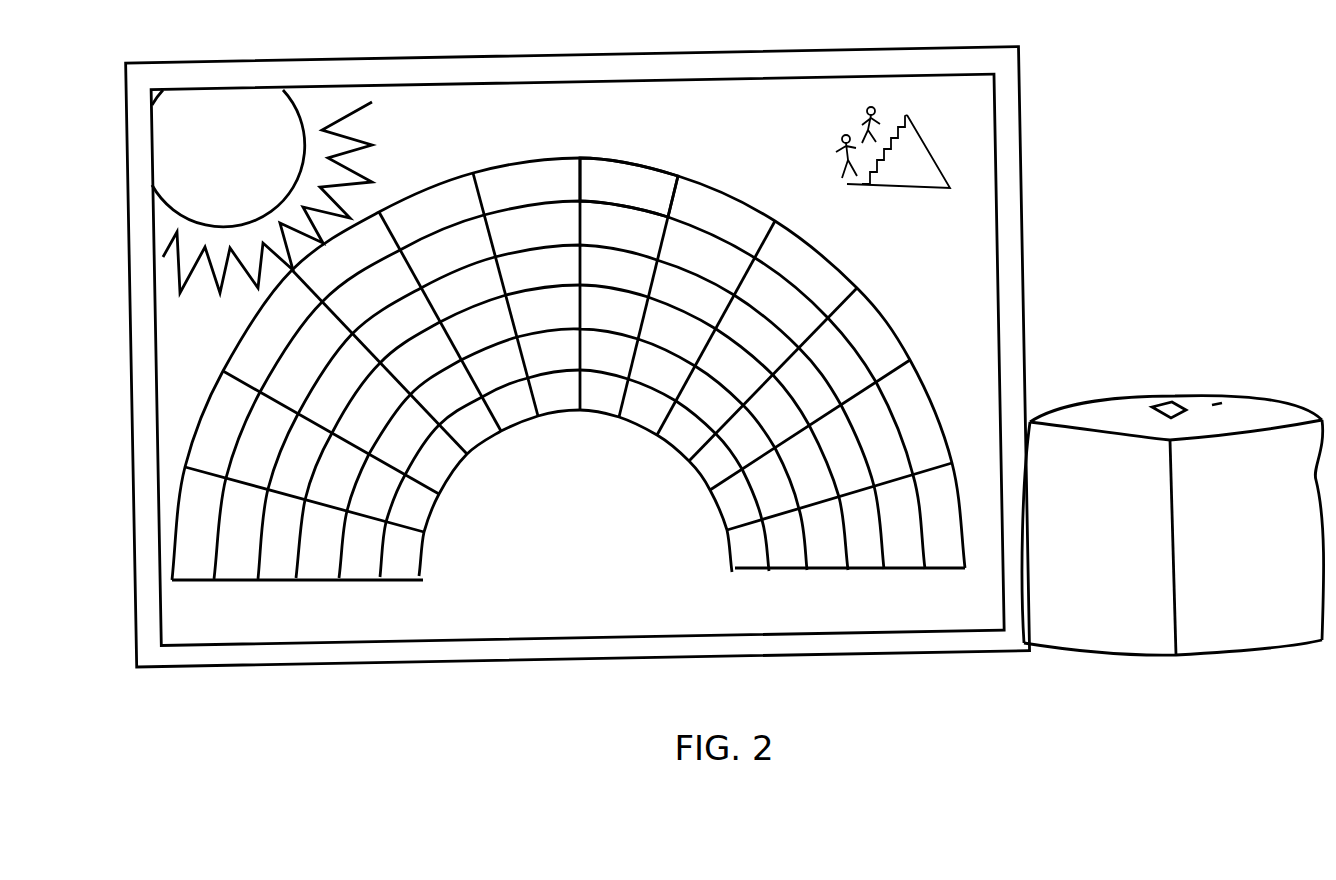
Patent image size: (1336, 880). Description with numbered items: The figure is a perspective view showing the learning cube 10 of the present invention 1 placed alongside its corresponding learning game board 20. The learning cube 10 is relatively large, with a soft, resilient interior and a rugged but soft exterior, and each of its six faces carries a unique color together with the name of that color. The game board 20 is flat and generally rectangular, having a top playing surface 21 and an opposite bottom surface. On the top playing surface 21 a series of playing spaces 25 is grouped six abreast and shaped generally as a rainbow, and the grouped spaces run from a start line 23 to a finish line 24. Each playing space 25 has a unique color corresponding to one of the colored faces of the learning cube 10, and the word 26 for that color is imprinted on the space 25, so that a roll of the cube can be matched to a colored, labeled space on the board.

The present invention 1 is at (725, 362).
The learning cube 10 is at (1173, 507).
The learning game board 20 is at (893, 108).
The top playing surface 21 is at (578, 362).
The start line 23 is at (270, 642).
The finish line 24 is at (812, 632).
The playing spaces 25 is at (568, 351).
The word 26 is at (629, 169).